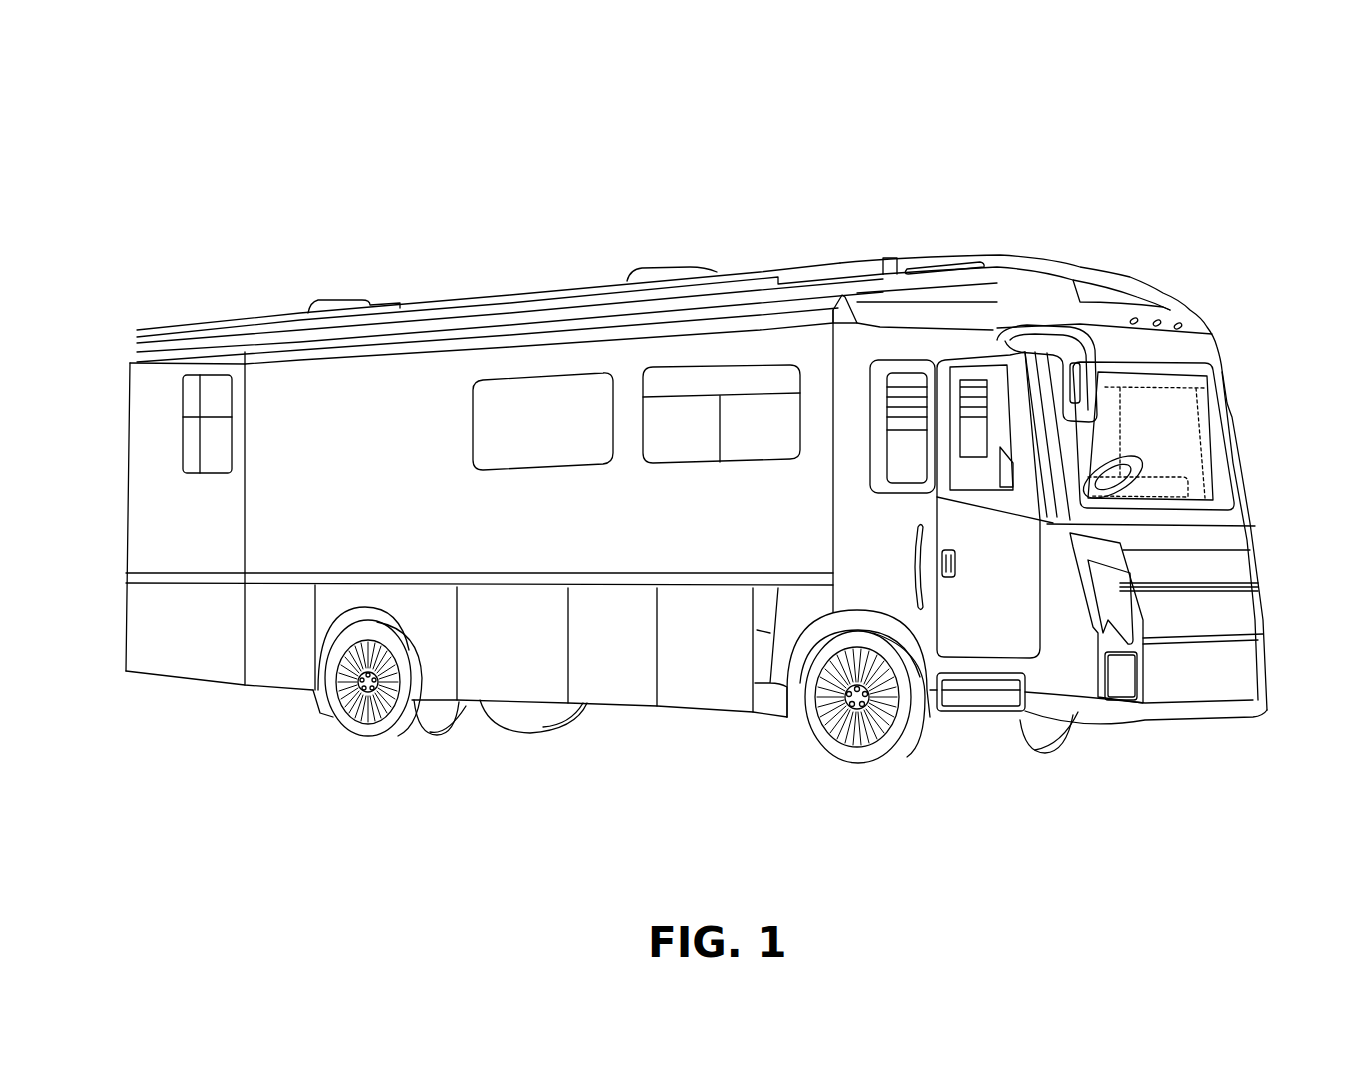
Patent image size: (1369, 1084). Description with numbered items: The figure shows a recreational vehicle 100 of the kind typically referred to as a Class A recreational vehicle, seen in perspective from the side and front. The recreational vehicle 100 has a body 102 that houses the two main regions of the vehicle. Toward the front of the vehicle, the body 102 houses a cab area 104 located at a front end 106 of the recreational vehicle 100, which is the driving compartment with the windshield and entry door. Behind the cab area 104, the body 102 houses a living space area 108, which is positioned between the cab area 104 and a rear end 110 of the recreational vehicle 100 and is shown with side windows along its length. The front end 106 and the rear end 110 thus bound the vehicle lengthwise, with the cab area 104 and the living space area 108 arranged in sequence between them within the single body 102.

The recreational vehicle 100 is at (213, 92).
The body 102 is at (497, 308).
The cab area 104 is at (1228, 258).
The front end 106 is at (1232, 622).
The living space area 108 is at (504, 438).
The rear end 110 is at (131, 368).